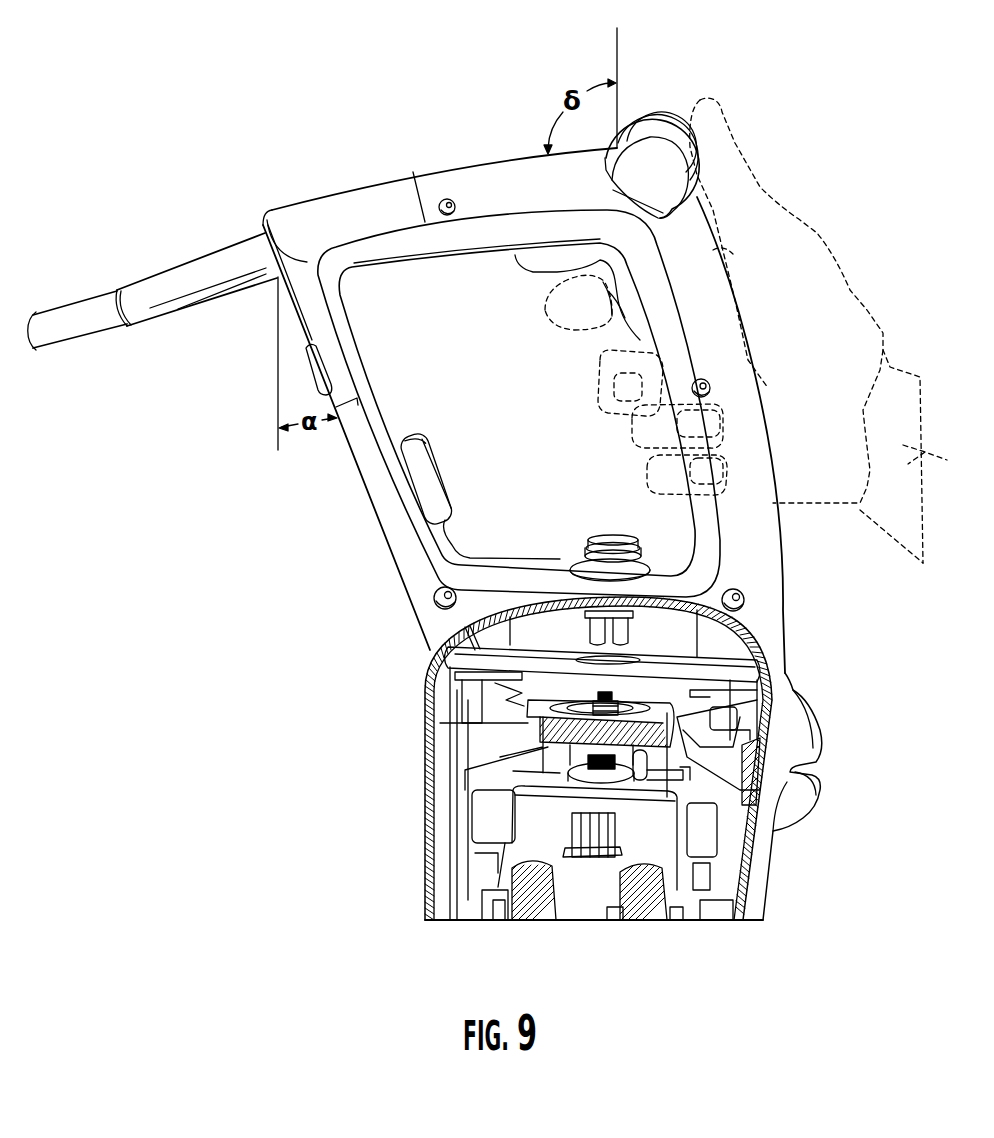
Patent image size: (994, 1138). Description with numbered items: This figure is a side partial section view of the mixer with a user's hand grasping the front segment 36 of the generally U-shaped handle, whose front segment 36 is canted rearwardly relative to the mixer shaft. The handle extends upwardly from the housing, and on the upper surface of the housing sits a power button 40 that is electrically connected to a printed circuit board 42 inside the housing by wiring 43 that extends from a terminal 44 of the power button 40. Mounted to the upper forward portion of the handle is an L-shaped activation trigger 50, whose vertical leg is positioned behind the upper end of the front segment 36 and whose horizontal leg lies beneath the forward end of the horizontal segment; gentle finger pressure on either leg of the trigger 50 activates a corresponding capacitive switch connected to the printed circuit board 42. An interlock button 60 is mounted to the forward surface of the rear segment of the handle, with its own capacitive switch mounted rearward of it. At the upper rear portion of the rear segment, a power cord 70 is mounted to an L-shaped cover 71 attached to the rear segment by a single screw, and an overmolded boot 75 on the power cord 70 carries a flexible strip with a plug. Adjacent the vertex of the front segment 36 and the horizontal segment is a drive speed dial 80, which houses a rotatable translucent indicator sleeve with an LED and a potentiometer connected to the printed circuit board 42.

The front segment 36 is at (747, 497).
The power button 40 is at (603, 537).
The printed circuit board 42 is at (713, 668).
The wiring 43 is at (710, 660).
The terminal 44 is at (630, 630).
The activation trigger 50 is at (620, 300).
The interlock button 60 is at (442, 475).
The power cord 70 is at (83, 322).
The cover 71 is at (343, 207).
The overmolded boot 75 is at (185, 272).
The drive speed dial 80 is at (765, 87).